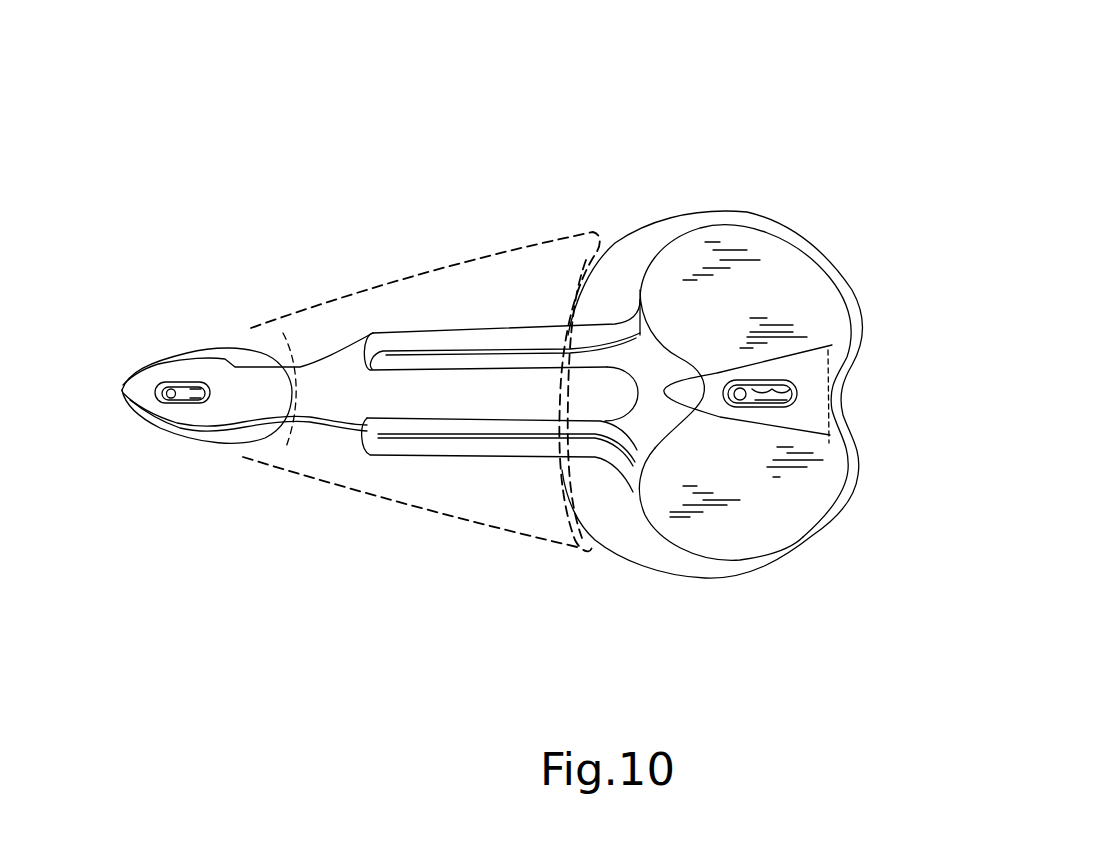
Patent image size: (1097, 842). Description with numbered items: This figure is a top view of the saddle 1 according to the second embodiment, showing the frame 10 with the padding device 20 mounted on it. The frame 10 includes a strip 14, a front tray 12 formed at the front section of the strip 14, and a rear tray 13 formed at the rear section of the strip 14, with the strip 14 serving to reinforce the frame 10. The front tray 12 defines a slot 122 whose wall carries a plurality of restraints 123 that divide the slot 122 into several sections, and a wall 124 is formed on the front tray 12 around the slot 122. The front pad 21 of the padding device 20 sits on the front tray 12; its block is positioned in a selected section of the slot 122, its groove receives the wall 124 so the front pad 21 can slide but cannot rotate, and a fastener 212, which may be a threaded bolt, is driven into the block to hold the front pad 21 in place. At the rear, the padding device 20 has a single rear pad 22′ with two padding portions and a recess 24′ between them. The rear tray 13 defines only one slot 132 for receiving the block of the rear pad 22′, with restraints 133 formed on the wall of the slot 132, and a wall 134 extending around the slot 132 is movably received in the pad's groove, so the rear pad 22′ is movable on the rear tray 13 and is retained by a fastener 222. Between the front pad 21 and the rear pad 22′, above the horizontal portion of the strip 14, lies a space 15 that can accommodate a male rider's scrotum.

The saddle 1 is at (403, 122).
The frame 10 is at (380, 565).
The front tray 12 is at (284, 442).
The rear tray 13 is at (815, 487).
The strip 14 is at (500, 393).
The space 15 is at (433, 236).
The padding device 20 is at (738, 180).
The front pad 21 is at (227, 354).
The rear pad 22′ is at (594, 378).
The recess 24′ is at (807, 390).
The slot 122 is at (156, 388).
The restraints 123 is at (170, 403).
The wall 124 is at (160, 386).
The slot 132 is at (768, 405).
The restraints 133 is at (756, 406).
The wall 134 is at (780, 405).
The fastener 212 is at (203, 405).
The fastener 222 is at (732, 406).